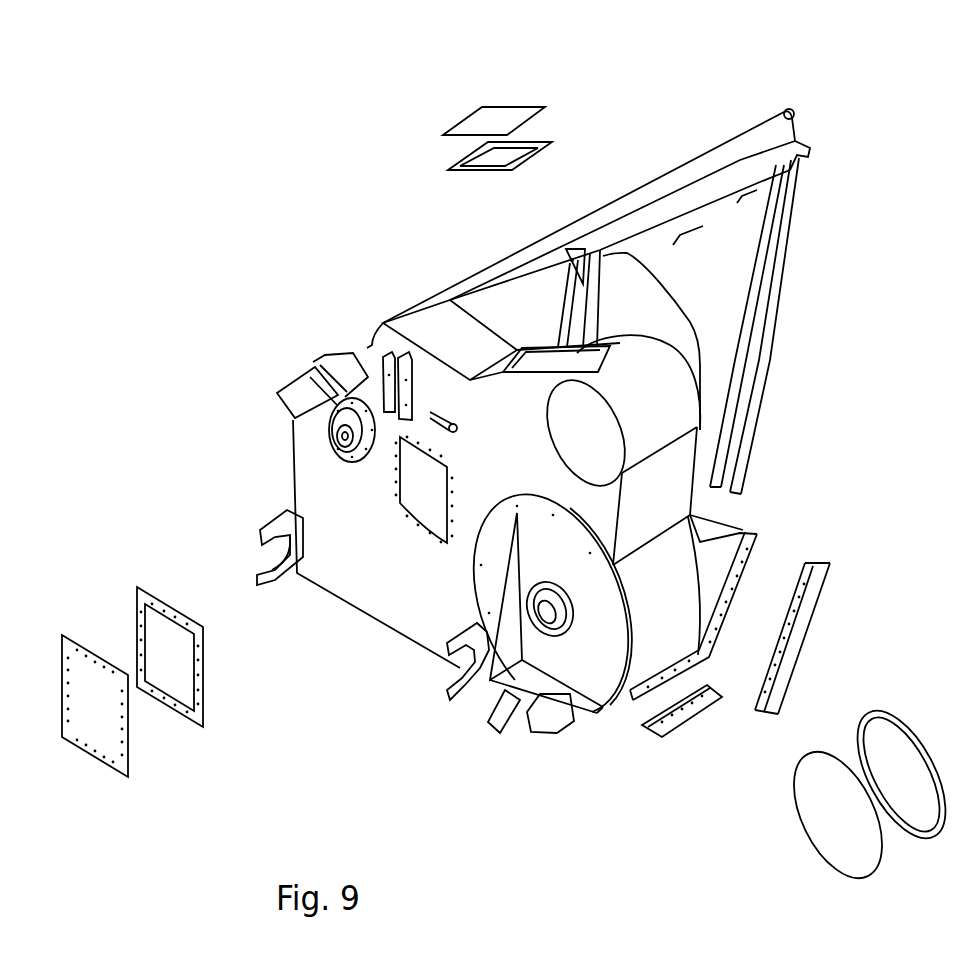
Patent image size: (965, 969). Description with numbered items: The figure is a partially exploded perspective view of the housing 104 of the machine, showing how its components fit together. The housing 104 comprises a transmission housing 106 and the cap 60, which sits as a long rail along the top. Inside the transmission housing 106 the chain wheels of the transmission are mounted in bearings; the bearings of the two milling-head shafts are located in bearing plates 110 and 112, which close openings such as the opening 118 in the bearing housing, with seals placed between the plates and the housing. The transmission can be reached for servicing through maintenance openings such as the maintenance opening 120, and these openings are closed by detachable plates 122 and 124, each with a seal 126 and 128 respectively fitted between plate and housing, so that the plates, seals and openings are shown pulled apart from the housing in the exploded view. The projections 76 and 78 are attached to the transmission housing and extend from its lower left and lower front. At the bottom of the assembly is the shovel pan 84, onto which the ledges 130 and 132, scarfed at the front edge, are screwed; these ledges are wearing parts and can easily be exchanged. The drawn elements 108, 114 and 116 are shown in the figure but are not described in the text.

The cap 60 is at (668, 180).
The projection 76 is at (275, 517).
The projection 78 is at (474, 690).
The shovel pan 84 is at (753, 543).
The housing 104 is at (372, 297).
The transmission housing 106 is at (657, 493).
The motor flange mount 108 is at (350, 458).
The bearing plate 110 is at (493, 578).
The bearing plate 112 is at (820, 788).
The drum housing 114 is at (607, 610).
The sealing ring 116 is at (885, 718).
The opening 118 is at (595, 427).
The maintenance opening 120 is at (430, 490).
The detachable plate 122 is at (107, 728).
The detachable plate 124 is at (492, 122).
The seal 126 is at (180, 670).
The seal 128 is at (500, 155).
The ledge 130 is at (657, 737).
The ledge 132 is at (817, 585).